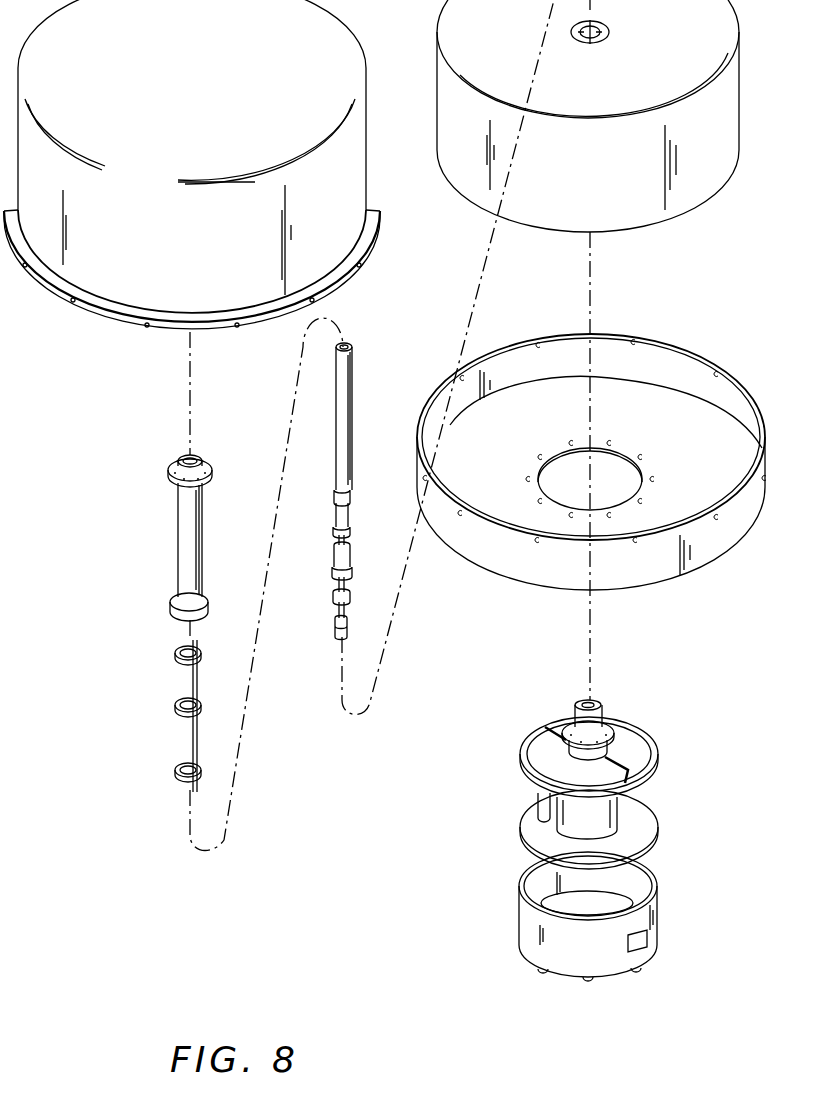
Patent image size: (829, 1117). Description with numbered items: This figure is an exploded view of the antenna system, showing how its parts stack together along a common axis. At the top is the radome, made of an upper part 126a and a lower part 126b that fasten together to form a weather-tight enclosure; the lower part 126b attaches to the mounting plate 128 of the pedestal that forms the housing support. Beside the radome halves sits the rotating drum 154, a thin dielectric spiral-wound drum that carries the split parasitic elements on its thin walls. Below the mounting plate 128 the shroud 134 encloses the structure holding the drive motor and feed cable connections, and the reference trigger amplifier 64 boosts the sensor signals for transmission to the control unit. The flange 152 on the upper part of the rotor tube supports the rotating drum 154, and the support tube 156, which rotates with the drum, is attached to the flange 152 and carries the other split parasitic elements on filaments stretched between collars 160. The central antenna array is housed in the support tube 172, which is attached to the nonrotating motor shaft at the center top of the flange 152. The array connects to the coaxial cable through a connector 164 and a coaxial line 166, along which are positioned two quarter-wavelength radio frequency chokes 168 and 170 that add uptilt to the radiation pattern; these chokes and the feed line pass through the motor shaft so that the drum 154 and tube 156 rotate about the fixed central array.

The upper half of radome 126a is at (220, 99).
The lower half of radome 126b is at (620, 573).
The rotating drum 154 is at (610, 79).
The support tube 156 is at (185, 528).
The collars 160 is at (177, 703).
The support tube 172 is at (344, 398).
The radio frequency choke 170 is at (345, 520).
The radio frequency choke 168 is at (346, 562).
The coaxial line 166 is at (336, 590).
The connector 164 is at (335, 629).
The flange 152 is at (610, 725).
The mounting plate 128 is at (648, 758).
The reference trigger amplifier 64 is at (668, 797).
The shroud 134 is at (660, 913).